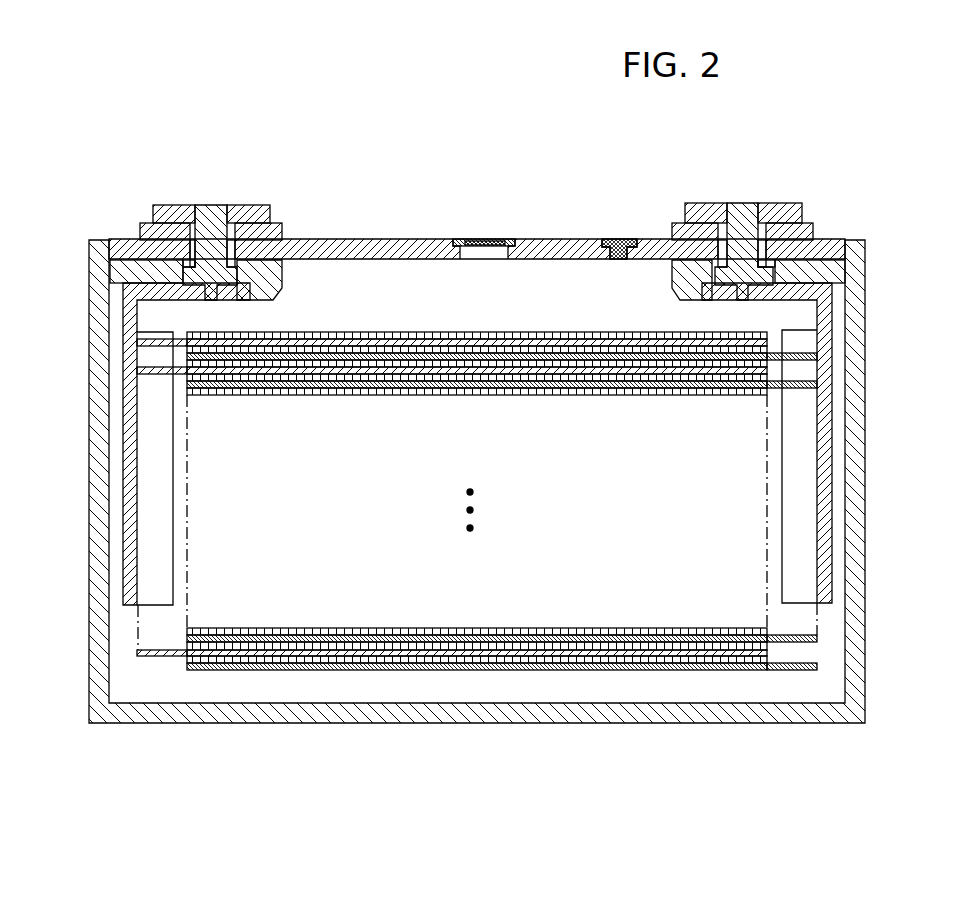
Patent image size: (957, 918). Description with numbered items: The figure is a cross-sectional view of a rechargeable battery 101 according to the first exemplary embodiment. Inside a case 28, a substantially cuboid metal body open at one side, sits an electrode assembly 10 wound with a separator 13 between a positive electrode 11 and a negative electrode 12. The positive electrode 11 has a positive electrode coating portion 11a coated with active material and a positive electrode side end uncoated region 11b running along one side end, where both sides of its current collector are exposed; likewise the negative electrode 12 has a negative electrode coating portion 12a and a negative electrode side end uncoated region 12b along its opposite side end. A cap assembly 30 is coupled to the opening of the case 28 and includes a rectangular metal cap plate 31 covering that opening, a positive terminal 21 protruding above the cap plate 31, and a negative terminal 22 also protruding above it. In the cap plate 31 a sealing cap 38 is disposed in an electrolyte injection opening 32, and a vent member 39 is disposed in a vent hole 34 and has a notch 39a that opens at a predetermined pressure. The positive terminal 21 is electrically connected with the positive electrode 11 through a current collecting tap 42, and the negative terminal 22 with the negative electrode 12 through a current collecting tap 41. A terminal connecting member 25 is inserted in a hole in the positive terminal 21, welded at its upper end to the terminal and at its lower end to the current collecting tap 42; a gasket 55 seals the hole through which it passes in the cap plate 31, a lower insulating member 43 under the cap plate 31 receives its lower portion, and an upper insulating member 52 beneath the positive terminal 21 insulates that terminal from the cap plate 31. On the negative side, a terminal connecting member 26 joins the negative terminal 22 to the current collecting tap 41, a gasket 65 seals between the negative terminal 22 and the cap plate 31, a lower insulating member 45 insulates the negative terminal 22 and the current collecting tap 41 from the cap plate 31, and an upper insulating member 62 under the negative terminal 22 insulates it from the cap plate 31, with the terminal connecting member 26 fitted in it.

The rechargeable battery 101 is at (492, 111).
The electrode assembly 10 is at (572, 676).
The positive electrode 11 is at (452, 578).
The positive electrode coating portion 11a is at (275, 657).
The positive electrode side end uncoated region 11b is at (157, 657).
The negative electrode 12 is at (508, 585).
The negative electrode coating portion 12a is at (670, 670).
The negative electrode side end uncoated region 12b is at (798, 565).
The separator 13 is at (420, 630).
The positive terminal 21 is at (170, 205).
The negative terminal 22 is at (772, 205).
The terminal connecting member 25 is at (212, 210).
The terminal connecting member 26 is at (740, 208).
The case 28 is at (855, 518).
The cap assembly 30 is at (442, 241).
The cap plate 31 is at (358, 243).
The electrolyte injection opening 32 is at (616, 260).
The vent hole 34 is at (495, 261).
The sealing cap 38 is at (615, 240).
The vent member 39 is at (507, 240).
The notch 39a is at (478, 240).
The current collecting tap 41 is at (830, 420).
The current collecting tap 42 is at (128, 398).
The lower insulating member 43 is at (125, 273).
The lower insulating member 45 is at (828, 271).
The upper insulating member 52 is at (277, 226).
The gasket 55 is at (190, 250).
The upper insulating member 62 is at (808, 226).
The gasket 65 is at (718, 250).